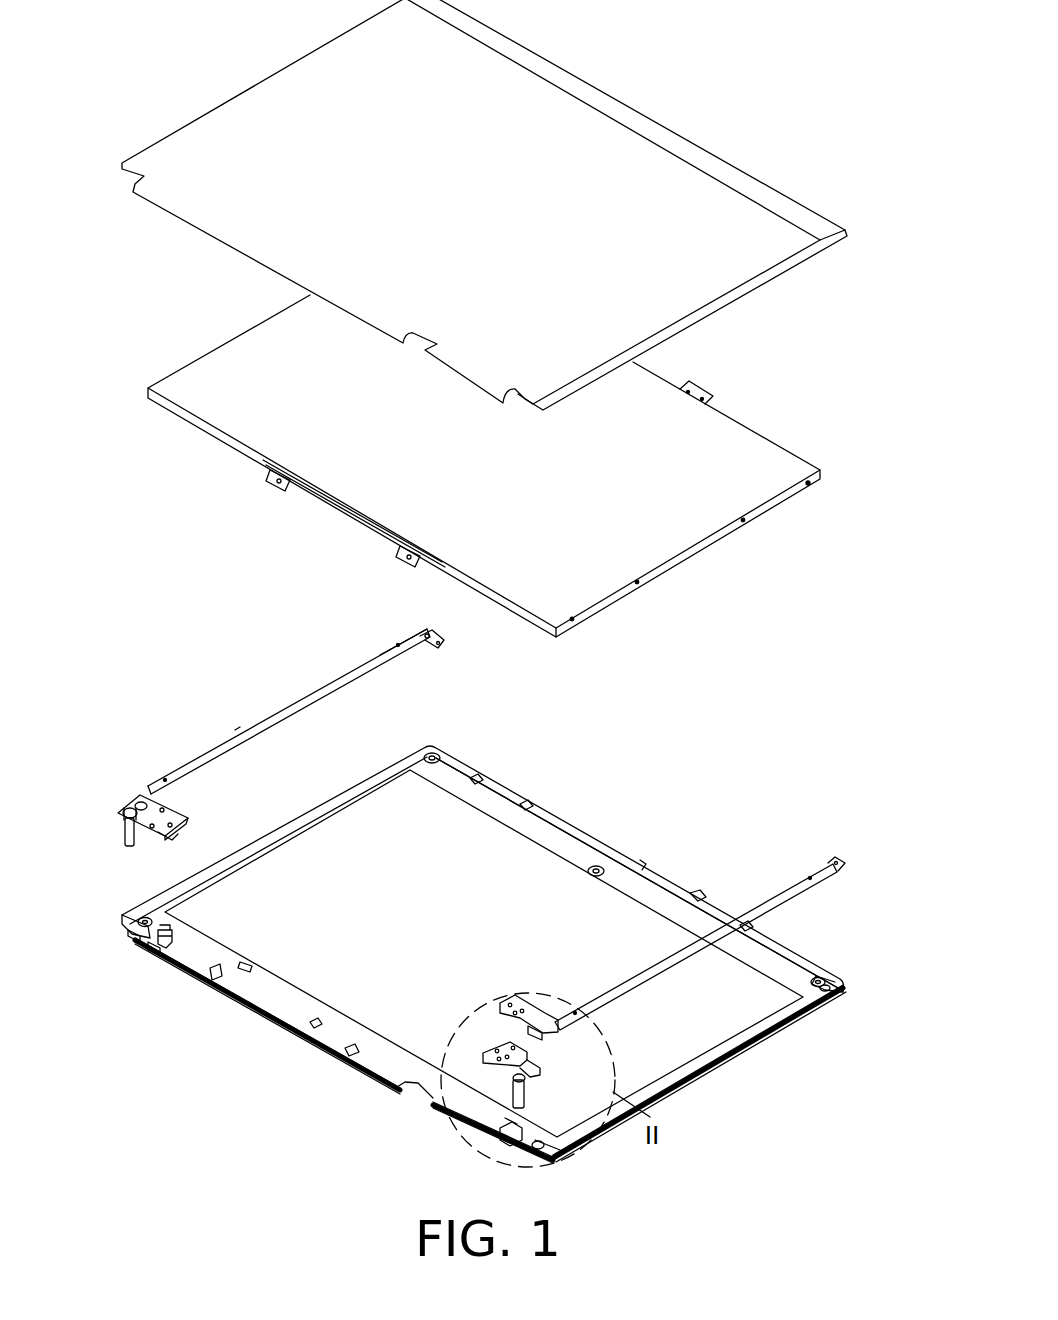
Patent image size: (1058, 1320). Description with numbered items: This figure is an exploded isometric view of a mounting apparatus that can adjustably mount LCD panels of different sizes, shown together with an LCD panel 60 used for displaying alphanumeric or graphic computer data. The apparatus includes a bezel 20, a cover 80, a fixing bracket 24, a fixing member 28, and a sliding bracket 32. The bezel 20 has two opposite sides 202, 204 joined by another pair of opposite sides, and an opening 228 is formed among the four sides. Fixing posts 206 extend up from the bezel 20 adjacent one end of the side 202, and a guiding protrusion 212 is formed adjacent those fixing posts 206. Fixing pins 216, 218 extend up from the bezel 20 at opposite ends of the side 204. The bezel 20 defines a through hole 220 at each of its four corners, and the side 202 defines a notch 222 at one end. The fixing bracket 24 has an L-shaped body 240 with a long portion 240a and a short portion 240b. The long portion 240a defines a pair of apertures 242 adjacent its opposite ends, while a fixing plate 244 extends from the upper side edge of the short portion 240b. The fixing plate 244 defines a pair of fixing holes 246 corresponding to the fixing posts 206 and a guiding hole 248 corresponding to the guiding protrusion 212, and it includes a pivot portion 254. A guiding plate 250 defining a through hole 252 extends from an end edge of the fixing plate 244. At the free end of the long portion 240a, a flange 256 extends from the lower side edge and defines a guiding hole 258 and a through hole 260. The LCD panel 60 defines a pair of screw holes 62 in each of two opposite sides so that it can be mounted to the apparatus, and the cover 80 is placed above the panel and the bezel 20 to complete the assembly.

The bezel 20 is at (483, 943).
The fixing bracket 24 is at (276, 730).
The fixing member 28 is at (553, 1060).
The sliding bracket 32 is at (636, 957).
The LCD panel 60 is at (777, 430).
The screw holes 62 is at (810, 485).
The cover 80 is at (783, 175).
The side 202 is at (252, 993).
The side 204 is at (550, 835).
The fixing posts 206 is at (152, 946).
The guiding protrusion 212 is at (174, 930).
The fixing pin 216 is at (434, 752).
The fixing pin 218 is at (826, 988).
The through hole 220 is at (145, 918).
The notch 222 is at (135, 936).
The opening 228 is at (413, 1025).
The body 240 is at (285, 712).
The long portion 240a is at (235, 730).
The short portion 240b is at (153, 788).
The apertures 242 is at (398, 645).
The fixing plate 244 is at (172, 808).
The fixing holes 246 is at (166, 830).
The guiding hole 248 is at (178, 817).
The guiding plate 250 is at (132, 808).
The through hole 252 is at (140, 802).
The pivot portion 254 is at (126, 826).
The flange 256 is at (444, 645).
The guiding hole 258 is at (425, 633).
The through hole 260 is at (438, 645).